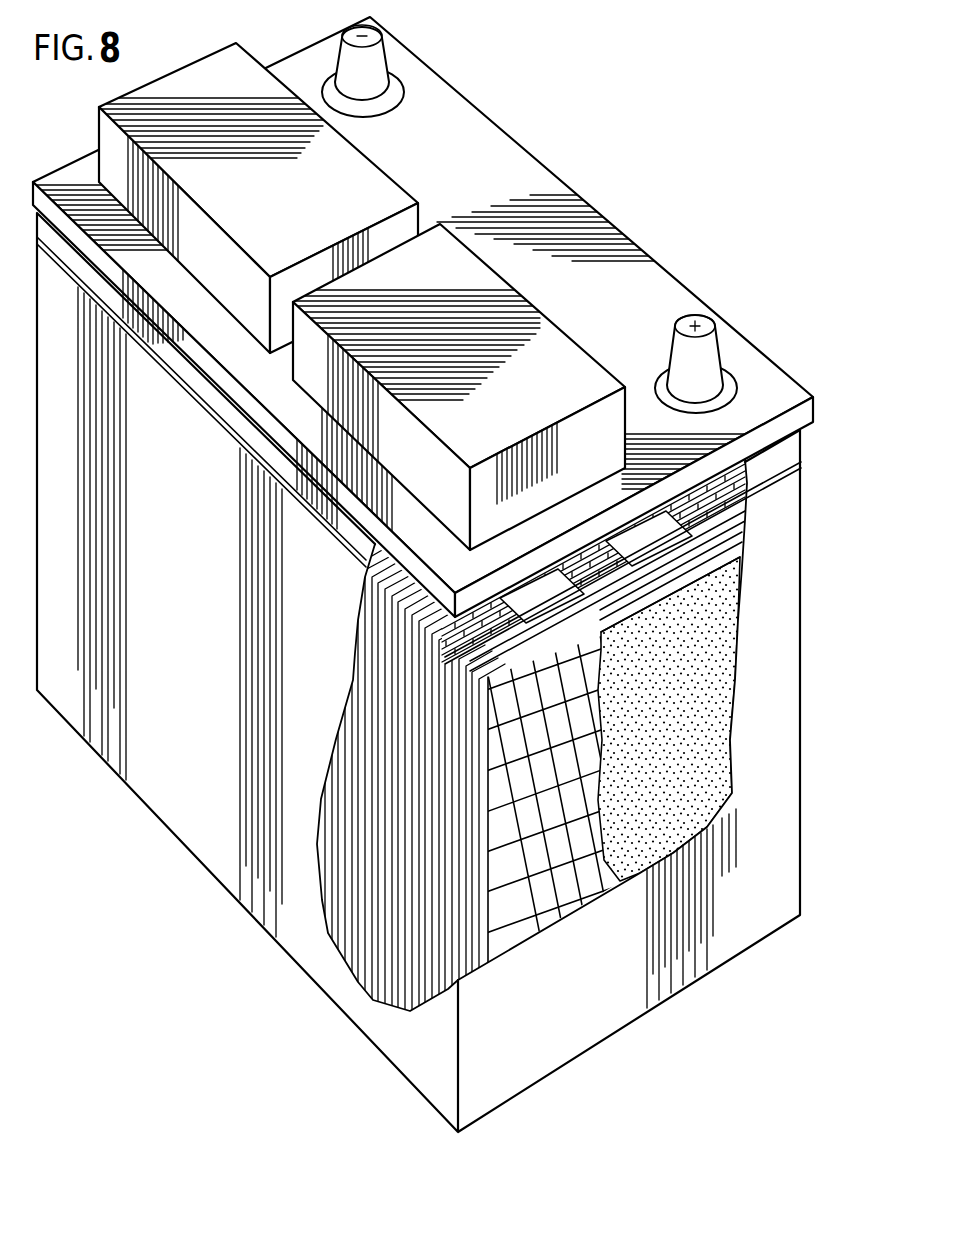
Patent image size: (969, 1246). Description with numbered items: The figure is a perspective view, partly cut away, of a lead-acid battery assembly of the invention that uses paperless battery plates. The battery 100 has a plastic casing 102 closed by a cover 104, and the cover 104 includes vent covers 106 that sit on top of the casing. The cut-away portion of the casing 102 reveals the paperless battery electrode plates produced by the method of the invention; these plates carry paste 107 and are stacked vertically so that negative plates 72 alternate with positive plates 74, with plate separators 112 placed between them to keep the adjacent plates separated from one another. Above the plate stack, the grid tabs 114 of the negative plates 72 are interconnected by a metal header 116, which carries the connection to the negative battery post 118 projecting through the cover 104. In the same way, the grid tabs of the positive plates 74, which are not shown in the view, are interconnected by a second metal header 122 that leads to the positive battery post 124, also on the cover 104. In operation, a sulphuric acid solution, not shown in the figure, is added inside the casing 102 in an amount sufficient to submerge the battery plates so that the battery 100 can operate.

The battery 100 is at (457, 672).
The plastic casing 102 is at (457, 672).
The cover 104 is at (812, 412).
The vent covers 106 is at (417, 257).
The paste 107 is at (700, 685).
The plate separators 112 is at (478, 938).
The grid tabs 114 is at (550, 578).
The metal header 116 is at (507, 527).
The negative battery post 118 is at (383, 58).
The metal header 122 is at (640, 530).
The positive battery post 124 is at (715, 350).
The negative plates 72 is at (723, 565).
The positive plates 74 is at (757, 510).